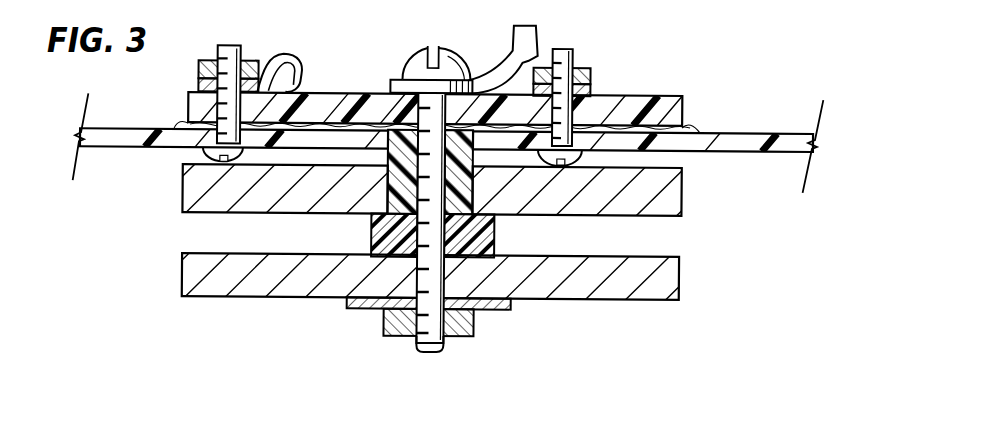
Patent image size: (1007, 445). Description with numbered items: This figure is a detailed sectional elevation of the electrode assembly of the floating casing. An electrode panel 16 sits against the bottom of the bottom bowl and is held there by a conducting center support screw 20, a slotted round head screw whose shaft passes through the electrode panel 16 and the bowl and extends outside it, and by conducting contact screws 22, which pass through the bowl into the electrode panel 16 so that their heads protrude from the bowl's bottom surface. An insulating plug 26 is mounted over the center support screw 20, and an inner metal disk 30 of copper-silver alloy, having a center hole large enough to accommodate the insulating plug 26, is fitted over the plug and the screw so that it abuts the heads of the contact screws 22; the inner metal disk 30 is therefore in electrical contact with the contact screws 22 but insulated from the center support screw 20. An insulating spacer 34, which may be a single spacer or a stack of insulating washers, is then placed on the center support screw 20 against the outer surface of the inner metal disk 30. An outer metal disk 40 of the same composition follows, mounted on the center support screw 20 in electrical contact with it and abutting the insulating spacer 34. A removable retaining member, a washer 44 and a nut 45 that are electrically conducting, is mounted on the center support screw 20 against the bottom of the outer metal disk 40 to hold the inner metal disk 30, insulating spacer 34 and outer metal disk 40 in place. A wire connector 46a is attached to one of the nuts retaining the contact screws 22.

The electrode panel 16 is at (342, 94).
The center support screw 20 is at (440, 58).
The contact screws 22 is at (222, 49).
The insulating plug 26 is at (398, 193).
The inner metal disk 30 is at (668, 204).
The insulating spacer 34 is at (494, 250).
The outer metal disk 40 is at (679, 294).
The washer 44 is at (510, 308).
The nut 45 is at (469, 335).
The wire connector 46a is at (283, 56).